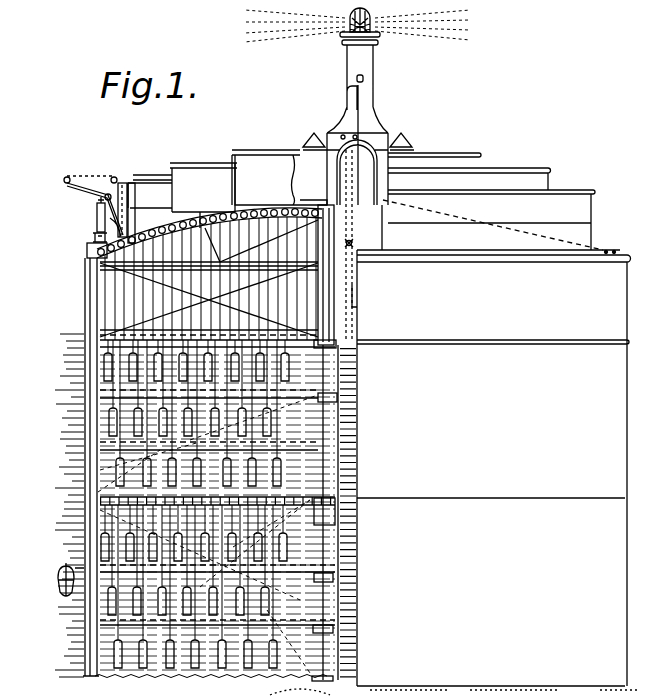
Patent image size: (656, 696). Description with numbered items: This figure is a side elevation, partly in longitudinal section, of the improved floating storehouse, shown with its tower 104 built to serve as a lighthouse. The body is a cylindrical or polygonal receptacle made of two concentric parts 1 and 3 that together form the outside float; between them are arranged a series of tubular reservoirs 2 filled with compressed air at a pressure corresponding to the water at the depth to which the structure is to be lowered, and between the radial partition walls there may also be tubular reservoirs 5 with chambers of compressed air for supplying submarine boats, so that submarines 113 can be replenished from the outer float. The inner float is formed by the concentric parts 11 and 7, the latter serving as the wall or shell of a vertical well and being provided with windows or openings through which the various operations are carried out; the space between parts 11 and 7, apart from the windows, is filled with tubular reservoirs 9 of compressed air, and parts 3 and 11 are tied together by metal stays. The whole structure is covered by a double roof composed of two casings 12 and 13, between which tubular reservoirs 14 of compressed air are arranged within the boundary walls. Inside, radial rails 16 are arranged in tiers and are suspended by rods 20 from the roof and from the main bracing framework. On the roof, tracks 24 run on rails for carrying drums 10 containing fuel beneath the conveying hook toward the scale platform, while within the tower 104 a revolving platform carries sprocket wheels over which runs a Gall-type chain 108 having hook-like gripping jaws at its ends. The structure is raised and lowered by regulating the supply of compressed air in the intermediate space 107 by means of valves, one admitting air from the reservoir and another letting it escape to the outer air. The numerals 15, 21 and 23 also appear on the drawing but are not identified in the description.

The outer concentric part 1 is at (98, 533).
The tubular reservoir 2 is at (209, 462).
The inner concentric part of outer float 3 is at (83, 455).
The tubular reservoir 5 is at (96, 213).
The well wall 7 is at (340, 331).
The tubular reservoir 9 is at (318, 255).
The drum 10 is at (97, 216).
The concentric part of inner float 11 is at (318, 315).
The roof casing 12 is at (255, 210).
The roof casing 13 is at (318, 228).
The tubular reservoir 14 is at (204, 222).
The cross beam 15 is at (226, 340).
The radial rail 16 is at (312, 358).
The suspension rod 20 is at (290, 301).
The transverse beam 21 is at (100, 504).
The pulley 23 is at (66, 184).
The track 24 is at (93, 238).
The tower 104 is at (388, 135).
The intermediate space 107 is at (209, 300).
The chain 108 is at (355, 180).
The submarine 113 is at (58, 592).